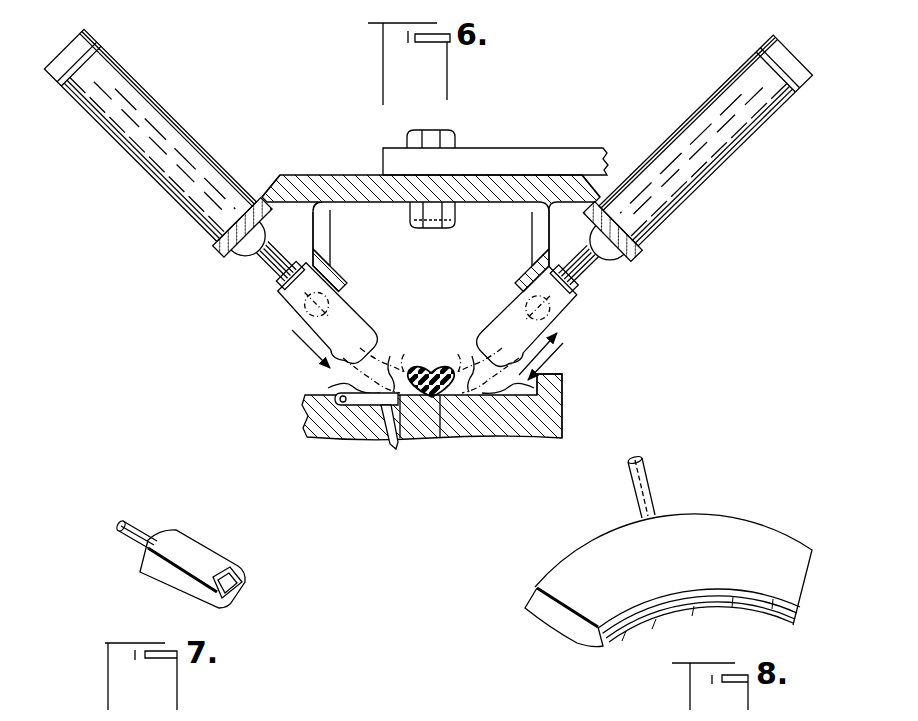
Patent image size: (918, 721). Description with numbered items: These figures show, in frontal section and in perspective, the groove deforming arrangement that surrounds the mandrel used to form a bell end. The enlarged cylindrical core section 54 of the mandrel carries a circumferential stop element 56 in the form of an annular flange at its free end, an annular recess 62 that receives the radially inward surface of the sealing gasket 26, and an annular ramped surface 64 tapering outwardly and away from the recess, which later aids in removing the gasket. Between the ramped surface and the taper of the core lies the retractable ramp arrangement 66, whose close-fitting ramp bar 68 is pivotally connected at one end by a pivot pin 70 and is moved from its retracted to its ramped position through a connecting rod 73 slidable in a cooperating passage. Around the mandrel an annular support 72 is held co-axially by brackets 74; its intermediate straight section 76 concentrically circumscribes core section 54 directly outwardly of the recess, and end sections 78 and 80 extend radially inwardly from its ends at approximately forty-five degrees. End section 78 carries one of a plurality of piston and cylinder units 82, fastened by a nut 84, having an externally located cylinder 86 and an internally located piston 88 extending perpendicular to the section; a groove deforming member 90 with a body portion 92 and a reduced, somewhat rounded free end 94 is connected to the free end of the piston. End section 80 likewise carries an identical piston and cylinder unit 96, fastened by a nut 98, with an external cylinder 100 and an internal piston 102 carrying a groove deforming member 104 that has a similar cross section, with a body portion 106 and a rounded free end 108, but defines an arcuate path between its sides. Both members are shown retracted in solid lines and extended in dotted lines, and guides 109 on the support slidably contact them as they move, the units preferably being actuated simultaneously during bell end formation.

In FIG. 6, the sealing gasket 26 is at (440, 366).
In FIG. 6, the second enlarged cylindrical core section 54 is at (488, 430).
In FIG. 6, the circumferential stop element 56 is at (563, 402).
In FIG. 6, the annular recess 62 is at (440, 412).
In FIG. 6, the annular ramped surface 64 is at (407, 366).
In FIG. 6, the retractable ramp arrangement 66 is at (380, 456).
In FIG. 6, the ramp bar 68 is at (328, 388).
In FIG. 6, the pivot pin 70 is at (378, 430).
In FIG. 6, the annular support 72 is at (336, 158).
In FIG. 6, the connecting rod 73 is at (389, 432).
In FIG. 6, the bracket 74 is at (496, 166).
In FIG. 6, the intermediate straight section 76 is at (382, 176).
In FIG. 6, the end section 78 is at (598, 200).
In FIG. 6, the end section 80 is at (256, 200).
In FIG. 6, the piston and cylinder unit 82 is at (664, 245).
In FIG. 6, the nut 84 is at (622, 266).
In FIG. 6, the cylinder 86 is at (677, 213).
In FIG. 6, the piston 88 is at (578, 281).
In FIG. 6, the groove deforming member 90 is at (563, 317).
In FIG. 7, the groove deforming member 90 is at (250, 560).
In FIG. 7, the body portion 92 is at (197, 550).
In FIG. 7, the reduced rounded free end 94 is at (237, 596).
In FIG. 6, the piston and cylinder unit 96 is at (192, 244).
In FIG. 6, the nut 98 is at (236, 256).
In FIG. 6, the cylinder 100 is at (200, 150).
In FIG. 6, the piston 102 is at (272, 268).
In FIG. 6, the groove deforming member 104 is at (363, 307).
In FIG. 8, the groove deforming member 104 is at (573, 640).
In FIG. 8, the body portion 106 is at (571, 578).
In FIG. 8, the reduced rounded free end 108 is at (679, 614).
In FIG. 6, the guide 109 is at (332, 226).